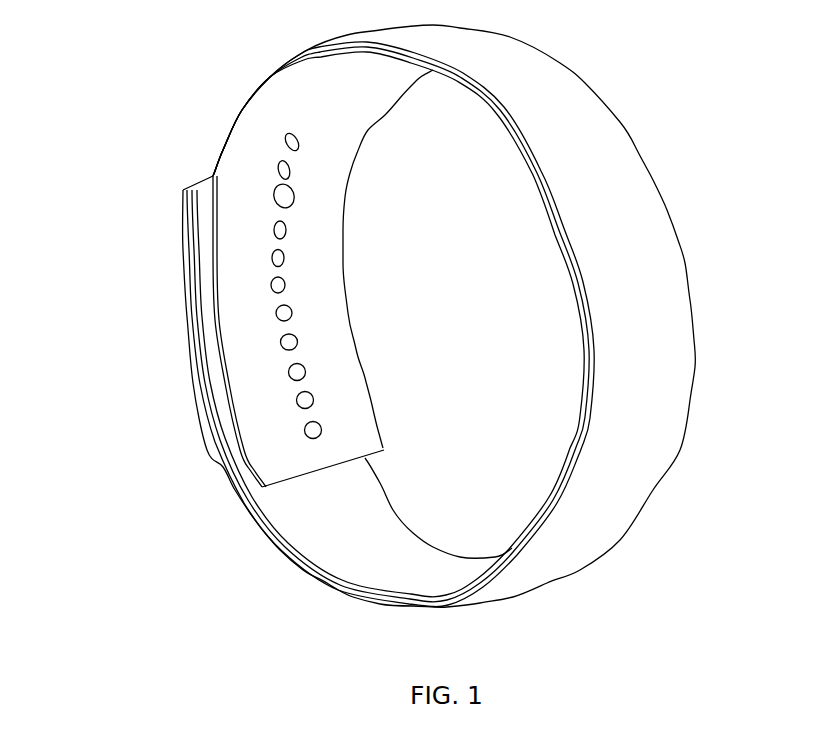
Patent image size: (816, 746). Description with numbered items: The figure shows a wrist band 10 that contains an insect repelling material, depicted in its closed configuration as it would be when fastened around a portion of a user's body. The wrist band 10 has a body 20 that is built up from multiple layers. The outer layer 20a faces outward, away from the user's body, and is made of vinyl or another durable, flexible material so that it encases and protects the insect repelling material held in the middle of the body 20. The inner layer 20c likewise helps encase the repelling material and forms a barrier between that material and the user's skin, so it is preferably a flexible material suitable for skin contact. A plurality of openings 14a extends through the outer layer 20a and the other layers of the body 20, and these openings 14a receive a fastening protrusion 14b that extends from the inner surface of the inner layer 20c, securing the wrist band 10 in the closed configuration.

The wrist band 10 is at (678, 168).
The body 20 is at (680, 257).
The outer layer 20a is at (648, 363).
The inner layer 20c is at (312, 540).
The plurality of openings 14a is at (312, 428).
The fastening protrusion 14b is at (285, 193).